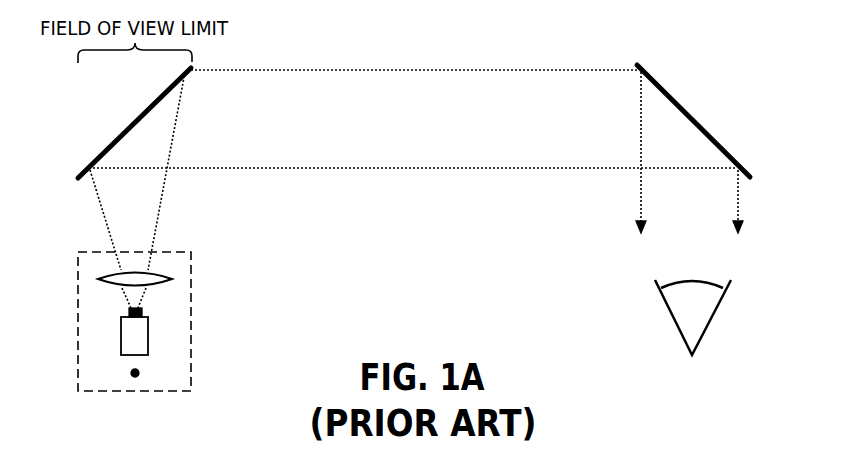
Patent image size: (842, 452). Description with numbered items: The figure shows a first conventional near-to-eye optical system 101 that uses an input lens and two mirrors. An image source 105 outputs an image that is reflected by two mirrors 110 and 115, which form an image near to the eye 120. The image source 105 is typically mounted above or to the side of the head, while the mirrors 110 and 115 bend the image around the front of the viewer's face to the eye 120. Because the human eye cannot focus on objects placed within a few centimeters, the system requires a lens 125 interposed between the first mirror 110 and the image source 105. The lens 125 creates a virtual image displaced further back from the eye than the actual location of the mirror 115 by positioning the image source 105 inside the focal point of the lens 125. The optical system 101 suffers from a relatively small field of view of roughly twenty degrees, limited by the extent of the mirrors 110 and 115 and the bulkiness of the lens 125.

The near-to-eye optical system 101 is at (391, 231).
The image source 105 is at (120, 334).
The first mirror 110 is at (97, 156).
The second mirror 115 is at (702, 130).
The eye 120 is at (708, 322).
The lens 125 is at (100, 276).